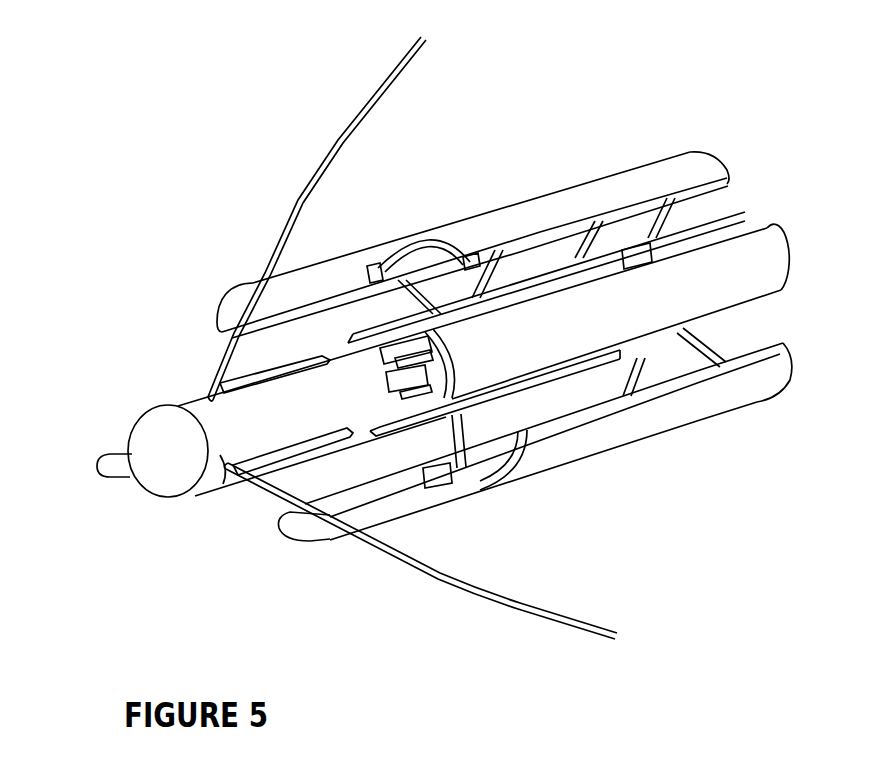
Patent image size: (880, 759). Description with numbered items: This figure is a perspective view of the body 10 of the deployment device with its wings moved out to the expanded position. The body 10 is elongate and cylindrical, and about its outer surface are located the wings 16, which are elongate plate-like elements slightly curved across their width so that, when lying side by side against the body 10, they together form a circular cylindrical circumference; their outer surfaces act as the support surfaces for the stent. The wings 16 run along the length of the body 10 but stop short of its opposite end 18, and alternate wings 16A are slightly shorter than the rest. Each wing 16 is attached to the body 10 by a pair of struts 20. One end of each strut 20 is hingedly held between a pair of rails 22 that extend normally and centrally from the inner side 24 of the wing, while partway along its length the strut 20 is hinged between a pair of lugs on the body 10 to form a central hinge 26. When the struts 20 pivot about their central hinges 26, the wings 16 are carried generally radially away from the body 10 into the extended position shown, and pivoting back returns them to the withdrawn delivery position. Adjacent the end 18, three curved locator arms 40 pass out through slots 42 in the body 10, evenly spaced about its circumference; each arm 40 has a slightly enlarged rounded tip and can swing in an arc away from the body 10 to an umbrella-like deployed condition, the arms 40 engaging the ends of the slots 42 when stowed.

The body 10 is at (223, 455).
The wings 16 is at (230, 300).
The alternate wings 16A is at (697, 163).
The opposite end 18 is at (157, 463).
The struts 20 is at (583, 227).
The rails 22 is at (380, 263).
The inner side 24 is at (310, 290).
The central hinge 26 is at (473, 262).
The locator arms 40 is at (370, 110).
The slot 42 is at (247, 375).